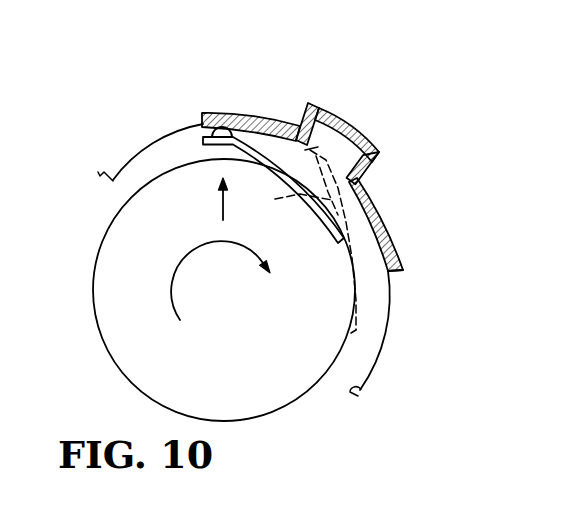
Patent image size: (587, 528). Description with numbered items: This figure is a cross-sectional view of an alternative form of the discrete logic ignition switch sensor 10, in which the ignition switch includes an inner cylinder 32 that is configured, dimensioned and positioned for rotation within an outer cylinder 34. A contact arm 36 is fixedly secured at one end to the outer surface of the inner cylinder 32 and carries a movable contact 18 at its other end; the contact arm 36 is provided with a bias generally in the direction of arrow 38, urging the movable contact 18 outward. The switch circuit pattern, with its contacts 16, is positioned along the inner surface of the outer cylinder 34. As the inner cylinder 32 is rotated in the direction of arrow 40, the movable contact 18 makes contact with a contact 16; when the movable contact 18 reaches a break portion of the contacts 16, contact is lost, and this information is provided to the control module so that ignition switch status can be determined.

The discrete logic ignition switch sensor 10 is at (322, 155).
The contact 16 is at (360, 137).
The movable contact 18 is at (208, 130).
The inner cylinder 32 is at (117, 217).
The outer cylinder 34 is at (390, 321).
The contact arm 36 is at (263, 160).
The arrow 38 is at (221, 205).
The arrow 40 is at (182, 293).